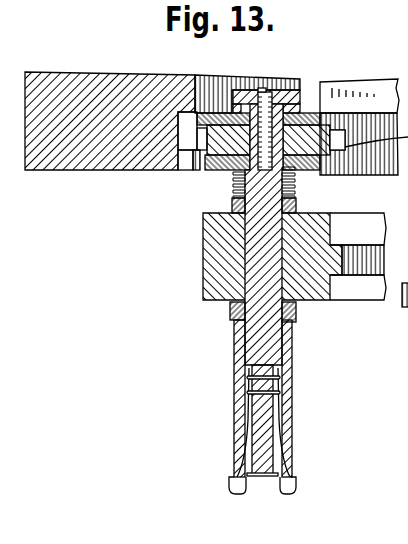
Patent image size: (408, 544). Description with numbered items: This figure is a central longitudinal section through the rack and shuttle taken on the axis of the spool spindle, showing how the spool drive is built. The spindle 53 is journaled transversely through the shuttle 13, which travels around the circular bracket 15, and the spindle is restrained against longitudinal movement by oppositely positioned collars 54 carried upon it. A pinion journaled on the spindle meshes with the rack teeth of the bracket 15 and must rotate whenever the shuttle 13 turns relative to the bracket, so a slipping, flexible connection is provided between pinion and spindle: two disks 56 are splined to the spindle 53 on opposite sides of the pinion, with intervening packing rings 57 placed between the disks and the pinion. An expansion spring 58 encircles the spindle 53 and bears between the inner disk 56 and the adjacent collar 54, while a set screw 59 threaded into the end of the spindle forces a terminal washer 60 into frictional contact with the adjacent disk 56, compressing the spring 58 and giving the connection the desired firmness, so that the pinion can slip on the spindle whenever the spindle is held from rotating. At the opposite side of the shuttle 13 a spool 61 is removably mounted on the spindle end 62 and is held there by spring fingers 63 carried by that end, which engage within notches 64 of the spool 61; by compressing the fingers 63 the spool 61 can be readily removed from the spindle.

The shuttle 13 is at (210, 277).
The circular bracket 15 is at (88, 166).
The spindle 53 is at (250, 250).
The collars 54 is at (232, 203).
The disks 56 is at (330, 111).
The packing rings 57 is at (305, 113).
The expansion spring 58 is at (294, 189).
The set screw 59 is at (262, 86).
The terminal washer 60 is at (237, 78).
The spool 61 is at (234, 386).
The spindle end 62 is at (258, 478).
The spring fingers 63 is at (401, 308).
The notches 64 is at (238, 463).